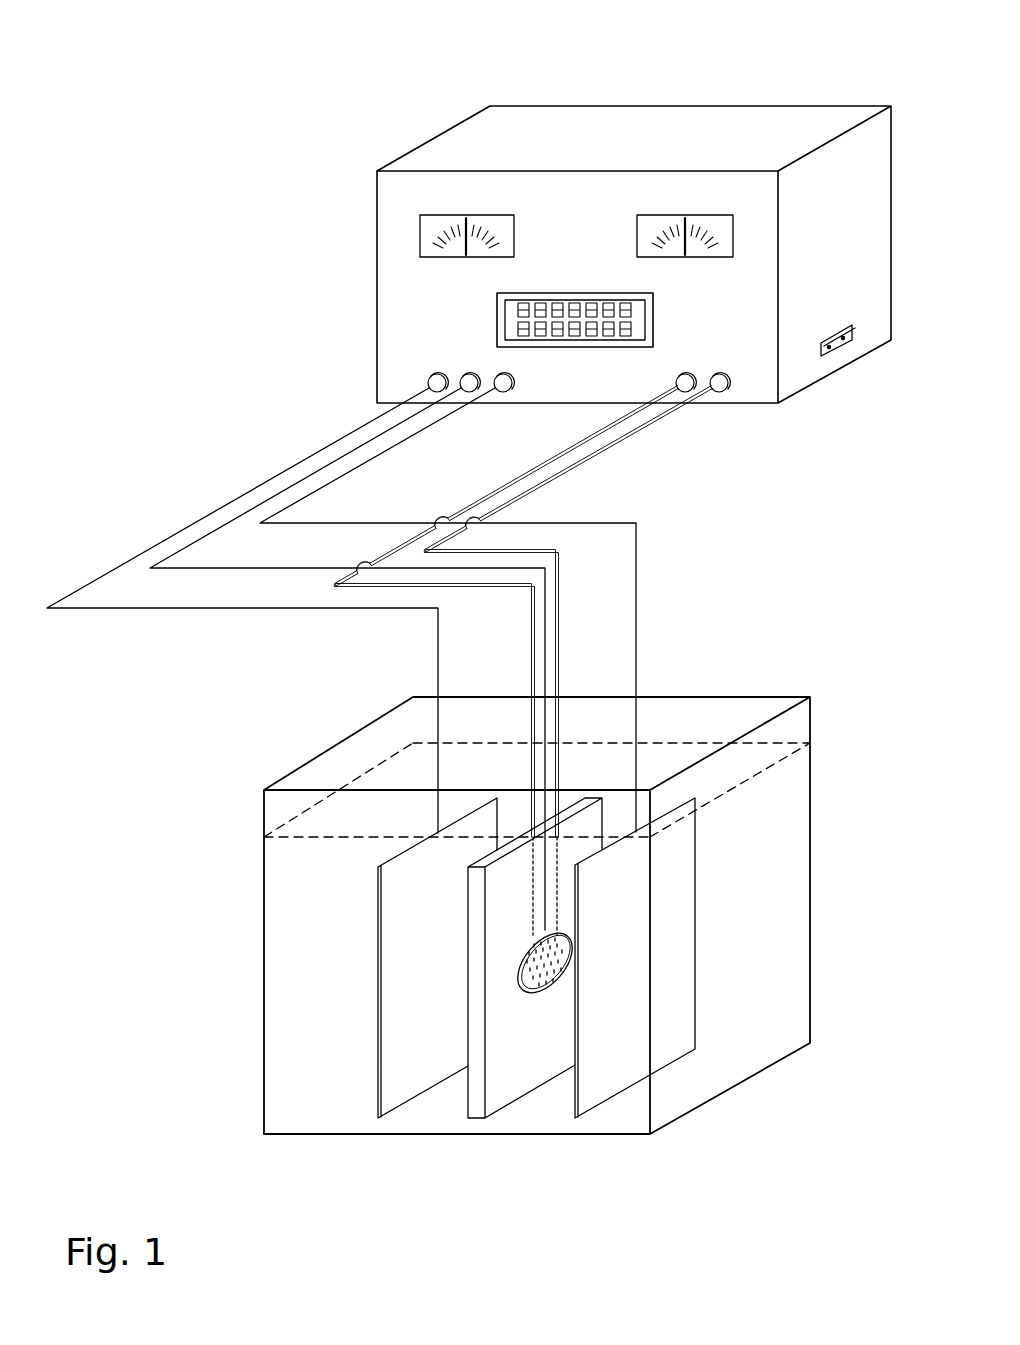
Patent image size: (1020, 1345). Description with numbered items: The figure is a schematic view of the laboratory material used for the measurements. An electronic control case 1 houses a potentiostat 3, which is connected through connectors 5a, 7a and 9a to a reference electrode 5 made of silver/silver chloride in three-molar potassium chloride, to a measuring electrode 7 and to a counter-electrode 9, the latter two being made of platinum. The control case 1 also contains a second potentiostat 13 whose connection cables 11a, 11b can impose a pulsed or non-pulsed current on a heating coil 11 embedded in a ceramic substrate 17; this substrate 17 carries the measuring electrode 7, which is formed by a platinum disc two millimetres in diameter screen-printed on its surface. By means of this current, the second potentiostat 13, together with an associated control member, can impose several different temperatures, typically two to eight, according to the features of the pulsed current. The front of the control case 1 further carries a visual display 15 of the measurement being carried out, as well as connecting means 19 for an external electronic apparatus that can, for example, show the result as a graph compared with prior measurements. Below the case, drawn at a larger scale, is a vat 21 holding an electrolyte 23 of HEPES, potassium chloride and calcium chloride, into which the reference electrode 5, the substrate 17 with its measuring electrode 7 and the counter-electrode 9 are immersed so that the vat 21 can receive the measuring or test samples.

The electronic control case 1 is at (831, 92).
The potentiostat 3 is at (435, 240).
The second potentiostat 13 is at (735, 230).
The visual display 15 is at (517, 322).
The connecting means 19 is at (838, 352).
The connector 5a is at (205, 515).
The connector 7a is at (305, 477).
The connector 9a is at (383, 452).
The connection cable 11a is at (605, 450).
The connection cable 11b is at (572, 448).
The vat 21 is at (315, 735).
The electrolyte 23 is at (712, 747).
The reference electrode 5 is at (410, 905).
The measuring electrode 7 is at (528, 962).
The counter-electrode 9 is at (678, 958).
The ceramic substrate 17 is at (498, 1078).
The heating coil 11 is at (548, 992).